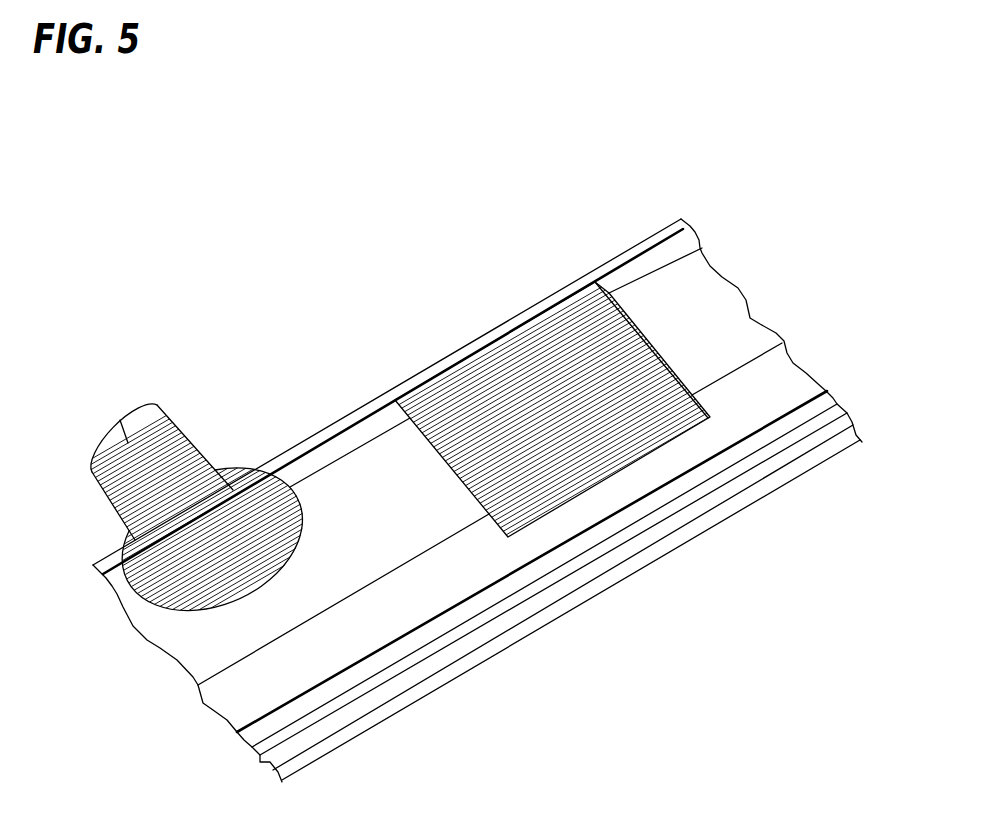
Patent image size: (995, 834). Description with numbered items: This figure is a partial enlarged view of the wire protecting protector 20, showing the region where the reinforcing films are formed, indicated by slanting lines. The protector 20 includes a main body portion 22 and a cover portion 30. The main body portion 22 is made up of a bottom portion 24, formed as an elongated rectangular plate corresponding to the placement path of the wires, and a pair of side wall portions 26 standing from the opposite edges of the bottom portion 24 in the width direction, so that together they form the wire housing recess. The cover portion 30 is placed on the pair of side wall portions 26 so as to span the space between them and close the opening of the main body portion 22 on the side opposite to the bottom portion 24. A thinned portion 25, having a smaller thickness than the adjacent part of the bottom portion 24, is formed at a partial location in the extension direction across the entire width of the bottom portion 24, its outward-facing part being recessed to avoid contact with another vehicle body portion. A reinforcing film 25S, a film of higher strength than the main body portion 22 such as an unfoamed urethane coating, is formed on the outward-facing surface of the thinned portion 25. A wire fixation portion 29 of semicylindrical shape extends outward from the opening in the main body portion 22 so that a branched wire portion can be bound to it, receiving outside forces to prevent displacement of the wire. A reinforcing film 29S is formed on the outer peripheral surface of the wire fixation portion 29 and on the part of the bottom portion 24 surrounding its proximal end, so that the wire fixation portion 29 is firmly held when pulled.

The wire protecting protector 20 is at (329, 409).
The main body portion 22 is at (787, 368).
The bottom portion 24 is at (730, 292).
The thinned portion 25 is at (540, 343).
The reinforcing film 25S is at (472, 390).
The side wall portions 26 is at (266, 764).
The wire fixation portion 29 is at (183, 422).
The reinforcing film 29S is at (118, 418).
The cover portion 30 is at (457, 682).